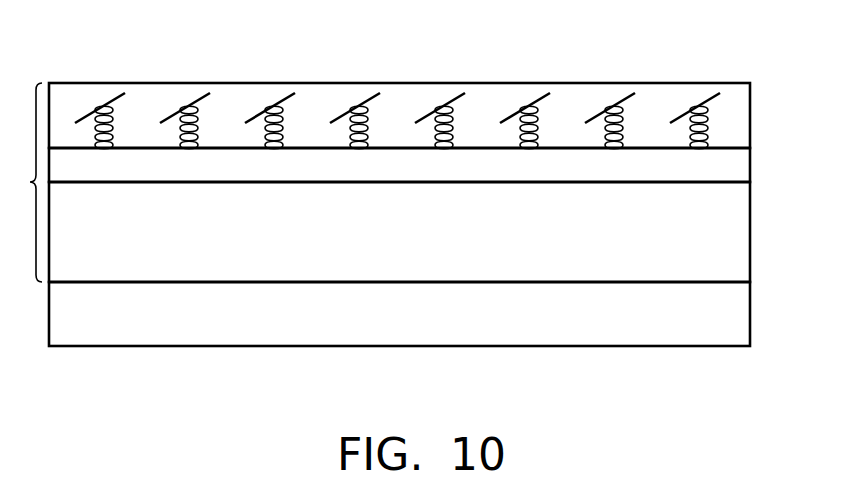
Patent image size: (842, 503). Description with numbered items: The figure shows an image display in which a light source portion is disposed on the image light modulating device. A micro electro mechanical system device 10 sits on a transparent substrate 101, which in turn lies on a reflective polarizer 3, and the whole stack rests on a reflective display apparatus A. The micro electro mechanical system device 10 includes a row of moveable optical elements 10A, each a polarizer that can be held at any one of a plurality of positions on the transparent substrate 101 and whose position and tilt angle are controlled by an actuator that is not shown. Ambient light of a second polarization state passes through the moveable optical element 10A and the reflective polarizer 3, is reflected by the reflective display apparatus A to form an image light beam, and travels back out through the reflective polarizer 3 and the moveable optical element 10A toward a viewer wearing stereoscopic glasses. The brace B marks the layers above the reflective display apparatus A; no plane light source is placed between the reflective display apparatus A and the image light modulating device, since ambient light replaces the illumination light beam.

The micro electro mechanical system device 10 is at (751, 115).
The moveable optical element 10A is at (400, 87).
The transparent substrate 101 is at (751, 170).
The reflective polarizer 3 is at (751, 230).
The reflective display apparatus A is at (751, 312).
The laminated structure B is at (23, 182).